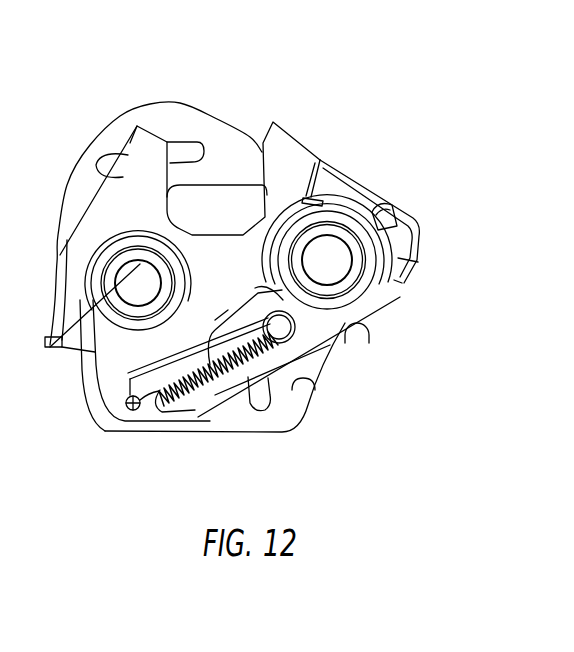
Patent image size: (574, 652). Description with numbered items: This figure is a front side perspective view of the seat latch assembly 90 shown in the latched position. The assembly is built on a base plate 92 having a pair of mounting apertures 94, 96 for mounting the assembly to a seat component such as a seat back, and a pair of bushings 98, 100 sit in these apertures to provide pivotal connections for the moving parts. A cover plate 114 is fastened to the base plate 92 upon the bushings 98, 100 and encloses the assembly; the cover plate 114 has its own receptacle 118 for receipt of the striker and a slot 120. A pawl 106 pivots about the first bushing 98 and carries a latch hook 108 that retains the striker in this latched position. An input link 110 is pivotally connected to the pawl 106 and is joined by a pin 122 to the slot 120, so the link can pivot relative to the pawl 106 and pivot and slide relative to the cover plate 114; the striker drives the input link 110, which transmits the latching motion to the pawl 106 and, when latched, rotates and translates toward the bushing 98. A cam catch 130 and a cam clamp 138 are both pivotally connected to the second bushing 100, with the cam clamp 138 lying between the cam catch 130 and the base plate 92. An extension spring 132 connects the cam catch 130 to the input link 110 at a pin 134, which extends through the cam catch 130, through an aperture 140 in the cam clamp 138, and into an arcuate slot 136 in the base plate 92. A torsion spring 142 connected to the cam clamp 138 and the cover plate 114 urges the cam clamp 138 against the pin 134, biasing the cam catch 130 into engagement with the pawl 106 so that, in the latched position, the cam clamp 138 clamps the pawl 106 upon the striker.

The latch assembly 90 is at (362, 98).
The base plate 92 is at (419, 262).
The mounting aperture 94 is at (86, 330).
The mounting aperture 96 is at (358, 345).
The bushing 98 is at (103, 280).
The bushing 100 is at (352, 268).
The pawl 106 is at (172, 120).
The latch hook 108 is at (222, 140).
The input link 110 is at (130, 408).
The cover plate 114 is at (130, 166).
The receptacle 118 is at (167, 210).
The slot 120 is at (248, 335).
The pin 122 is at (230, 340).
The cam catch 130 is at (323, 335).
The extension spring 132 is at (180, 415).
The pin 134 is at (296, 350).
The arcuate slot 136 is at (327, 245).
The cam clamp 138 is at (388, 213).
The aperture 140 is at (274, 343).
The torsion spring 142 is at (317, 190).